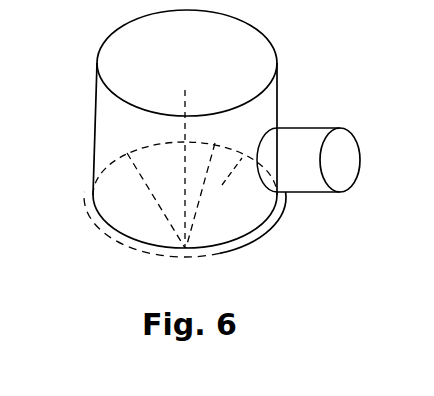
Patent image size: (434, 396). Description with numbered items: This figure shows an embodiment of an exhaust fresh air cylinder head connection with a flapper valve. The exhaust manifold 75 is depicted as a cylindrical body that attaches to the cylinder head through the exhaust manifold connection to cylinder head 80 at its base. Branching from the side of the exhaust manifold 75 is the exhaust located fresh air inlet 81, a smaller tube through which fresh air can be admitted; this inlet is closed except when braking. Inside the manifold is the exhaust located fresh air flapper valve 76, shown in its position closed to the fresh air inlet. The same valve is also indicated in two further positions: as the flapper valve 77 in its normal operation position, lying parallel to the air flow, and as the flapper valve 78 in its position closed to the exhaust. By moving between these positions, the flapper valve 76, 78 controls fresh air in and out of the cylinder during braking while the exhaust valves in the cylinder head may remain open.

The exhaust manifold 75 is at (277, 57).
The exhaust located fresh air flapper valve 76 is at (220, 190).
The flapper valve in normal operation position 77 is at (186, 196).
The flapper valve in closed to exhaust position 78 is at (120, 138).
The exhaust manifold connection to cylinder head 80 is at (82, 208).
The exhaust located fresh air inlet 81 is at (345, 158).